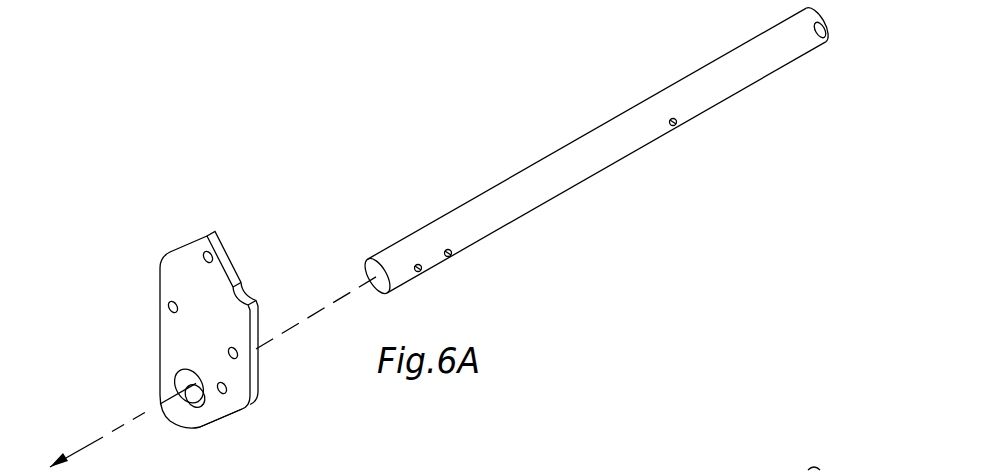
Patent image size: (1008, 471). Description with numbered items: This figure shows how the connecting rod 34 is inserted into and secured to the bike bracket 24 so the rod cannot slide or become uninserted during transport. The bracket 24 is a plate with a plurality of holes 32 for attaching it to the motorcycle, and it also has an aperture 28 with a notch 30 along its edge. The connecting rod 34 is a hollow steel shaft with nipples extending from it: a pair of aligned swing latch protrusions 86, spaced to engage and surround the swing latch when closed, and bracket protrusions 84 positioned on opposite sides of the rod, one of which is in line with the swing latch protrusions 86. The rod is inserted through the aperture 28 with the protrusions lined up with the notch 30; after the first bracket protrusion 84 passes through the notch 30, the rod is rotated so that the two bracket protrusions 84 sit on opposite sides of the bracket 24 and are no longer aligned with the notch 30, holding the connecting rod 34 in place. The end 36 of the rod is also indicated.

The first bike bracket 24 is at (225, 227).
The aperture 28 is at (186, 404).
The notch 30 is at (220, 412).
The holes 32 is at (169, 309).
The connecting rod 34 is at (582, 128).
The rod end 36 is at (384, 255).
The bracket protrusions 84 is at (677, 126).
The swing latch protrusions 86 is at (422, 272).